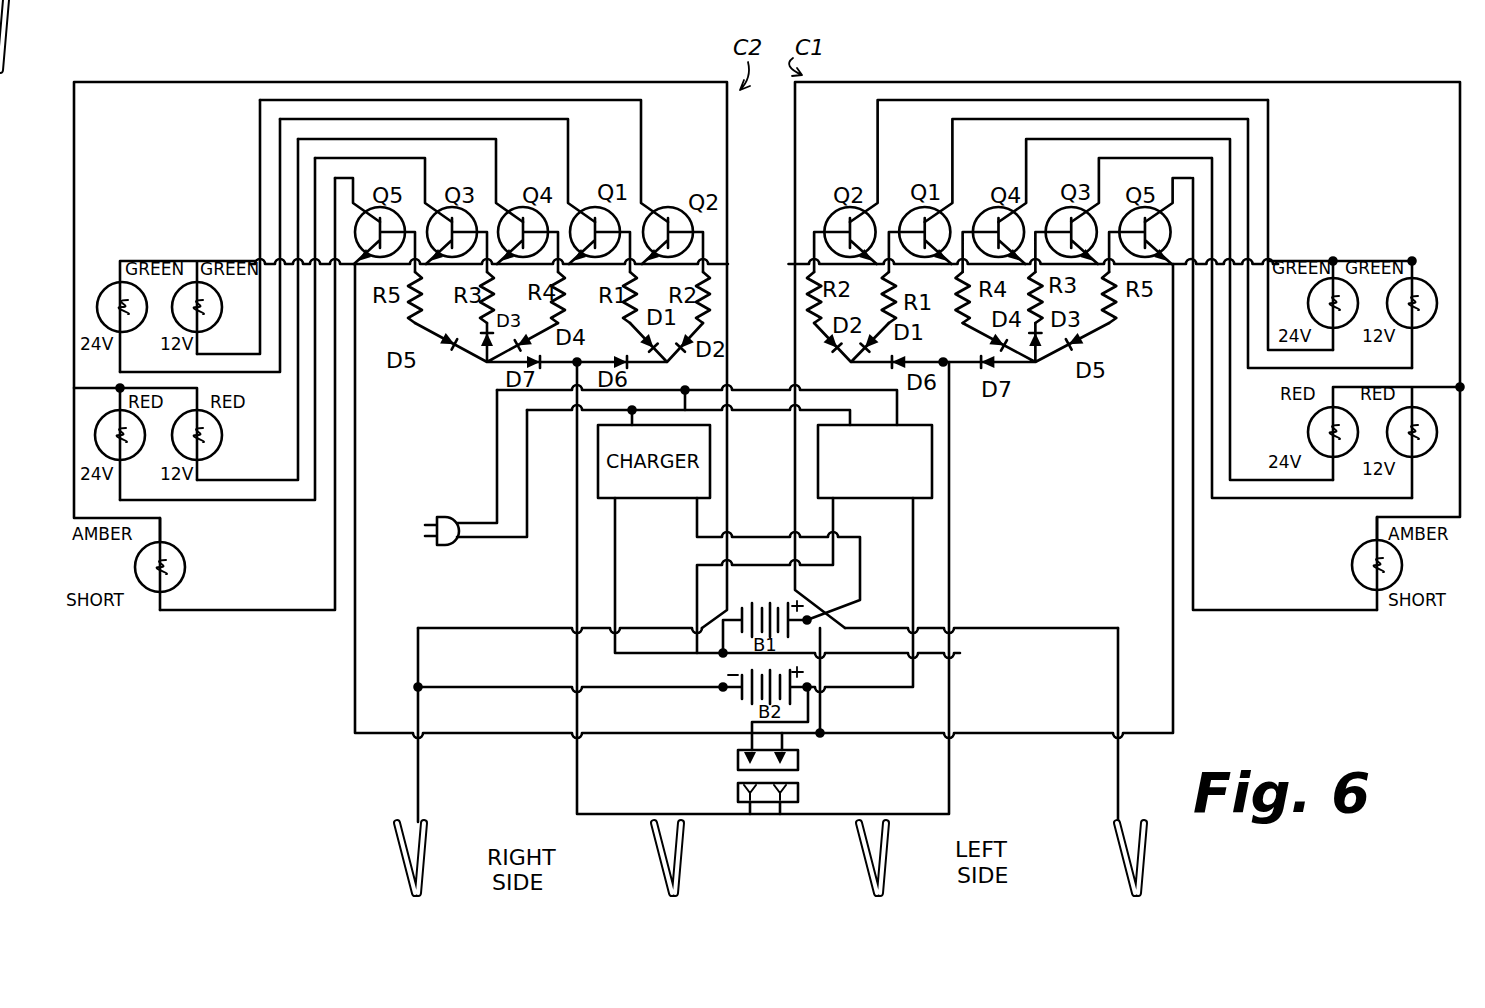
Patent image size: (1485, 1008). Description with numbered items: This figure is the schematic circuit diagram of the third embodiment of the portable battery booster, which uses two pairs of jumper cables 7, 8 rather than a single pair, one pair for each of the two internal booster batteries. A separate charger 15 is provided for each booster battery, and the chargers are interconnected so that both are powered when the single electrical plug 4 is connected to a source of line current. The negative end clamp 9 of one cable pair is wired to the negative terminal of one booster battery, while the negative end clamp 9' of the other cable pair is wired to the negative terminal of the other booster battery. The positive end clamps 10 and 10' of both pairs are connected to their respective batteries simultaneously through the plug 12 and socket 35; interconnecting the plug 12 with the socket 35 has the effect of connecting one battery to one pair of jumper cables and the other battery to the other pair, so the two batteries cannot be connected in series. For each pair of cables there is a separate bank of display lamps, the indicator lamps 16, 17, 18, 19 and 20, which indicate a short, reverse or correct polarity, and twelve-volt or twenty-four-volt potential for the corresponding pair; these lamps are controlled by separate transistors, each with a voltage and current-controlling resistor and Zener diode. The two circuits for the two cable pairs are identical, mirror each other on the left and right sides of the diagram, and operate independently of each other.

The electrical plug 4 is at (448, 545).
The jumper cables 7 is at (421, 770).
The jumper cables 8 is at (680, 816).
The negative end clamp 9 is at (1150, 858).
The negative end clamp 9' is at (435, 864).
The positive end clamp 10 is at (897, 870).
The positive end clamp 10' is at (701, 867).
The plug 12 is at (800, 760).
The charger 15 is at (932, 458).
The indicator lamp 16 is at (172, 580).
The indicator lamp 17 is at (213, 452).
The indicator lamp 18 is at (135, 455).
The indicator lamp 19 is at (212, 326).
The indicator lamp 20 is at (128, 330).
The socket 35 is at (800, 793).